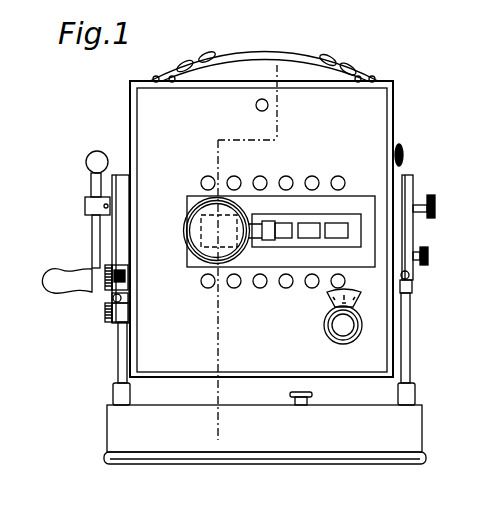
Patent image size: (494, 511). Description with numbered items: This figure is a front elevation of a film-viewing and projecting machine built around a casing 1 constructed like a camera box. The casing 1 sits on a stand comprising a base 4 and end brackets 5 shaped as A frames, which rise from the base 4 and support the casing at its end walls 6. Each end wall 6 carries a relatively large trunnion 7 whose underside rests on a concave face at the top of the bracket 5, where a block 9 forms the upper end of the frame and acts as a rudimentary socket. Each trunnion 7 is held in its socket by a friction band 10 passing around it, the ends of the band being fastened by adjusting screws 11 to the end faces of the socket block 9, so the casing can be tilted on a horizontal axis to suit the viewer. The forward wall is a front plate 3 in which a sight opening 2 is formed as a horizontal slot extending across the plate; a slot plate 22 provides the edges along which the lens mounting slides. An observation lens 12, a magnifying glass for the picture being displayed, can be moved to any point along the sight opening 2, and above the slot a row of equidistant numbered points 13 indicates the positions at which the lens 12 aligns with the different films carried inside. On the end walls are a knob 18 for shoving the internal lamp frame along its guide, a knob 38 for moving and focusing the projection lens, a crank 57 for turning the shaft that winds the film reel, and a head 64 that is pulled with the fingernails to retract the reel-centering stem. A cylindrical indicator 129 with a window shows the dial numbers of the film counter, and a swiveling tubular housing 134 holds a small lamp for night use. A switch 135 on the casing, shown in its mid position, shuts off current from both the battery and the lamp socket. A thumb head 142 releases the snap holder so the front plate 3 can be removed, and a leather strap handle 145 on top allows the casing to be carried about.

The casing 1 is at (395, 123).
The sight opening 2 is at (352, 213).
The front plate 3 is at (375, 106).
The base 4 is at (418, 424).
The end brackets 5 is at (125, 346).
The end walls 6 is at (278, 70).
The trunnions 7 is at (113, 228).
The block 9 is at (113, 299).
The friction band 10 is at (117, 176).
The adjusting screws 11 is at (410, 277).
The observation lens 12 is at (197, 240).
The numbered points 13 is at (201, 180).
The knob 18 is at (428, 254).
The slot plate 22 is at (322, 200).
The knob 38 is at (433, 200).
The crank 57 is at (92, 268).
The head 64 is at (404, 153).
The indicator 129 is at (118, 268).
The swiveling tubular housing 134 is at (112, 325).
The switch 135 is at (330, 334).
The thumb head 142 is at (256, 104).
The leather strap handle 145 is at (288, 48).